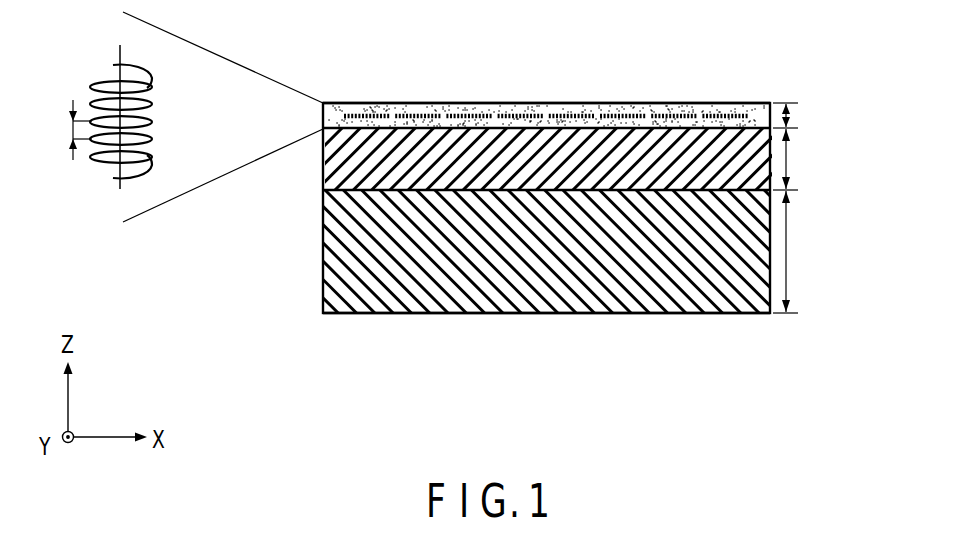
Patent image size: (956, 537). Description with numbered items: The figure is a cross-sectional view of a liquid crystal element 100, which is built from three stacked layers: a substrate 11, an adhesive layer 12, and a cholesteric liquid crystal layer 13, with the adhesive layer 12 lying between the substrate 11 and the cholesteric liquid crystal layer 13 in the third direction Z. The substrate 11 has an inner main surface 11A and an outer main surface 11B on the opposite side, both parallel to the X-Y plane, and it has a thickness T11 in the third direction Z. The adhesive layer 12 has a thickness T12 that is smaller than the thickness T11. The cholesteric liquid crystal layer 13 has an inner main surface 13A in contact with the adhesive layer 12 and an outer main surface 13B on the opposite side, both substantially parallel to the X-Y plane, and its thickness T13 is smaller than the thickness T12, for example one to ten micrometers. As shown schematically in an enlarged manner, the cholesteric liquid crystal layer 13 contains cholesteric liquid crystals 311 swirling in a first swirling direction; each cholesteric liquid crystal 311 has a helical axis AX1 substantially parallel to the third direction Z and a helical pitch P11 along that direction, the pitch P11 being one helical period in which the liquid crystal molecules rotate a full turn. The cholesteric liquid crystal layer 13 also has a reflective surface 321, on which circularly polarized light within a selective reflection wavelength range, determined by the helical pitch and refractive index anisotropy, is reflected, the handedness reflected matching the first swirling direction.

The liquid crystal element 100 is at (596, 390).
The substrate 11 is at (386, 297).
The main surface (inner surface) 11A is at (585, 176).
The main surface (outer surface) 11B is at (637, 326).
The adhesive layer 12 is at (449, 182).
The cholesteric liquid crystal layer 13 is at (340, 112).
The main surface (inner surface) 13A is at (498, 137).
The main surface (outer surface) 13B is at (573, 92).
The reflective surface 321 is at (724, 112).
The cholesteric liquid crystal 311 is at (151, 74).
The helical axis AX1 is at (118, 55).
The helical pitch P11 is at (72, 130).
The thickness T11 is at (789, 256).
The thickness T12 is at (789, 160).
The thickness T13 is at (789, 118).